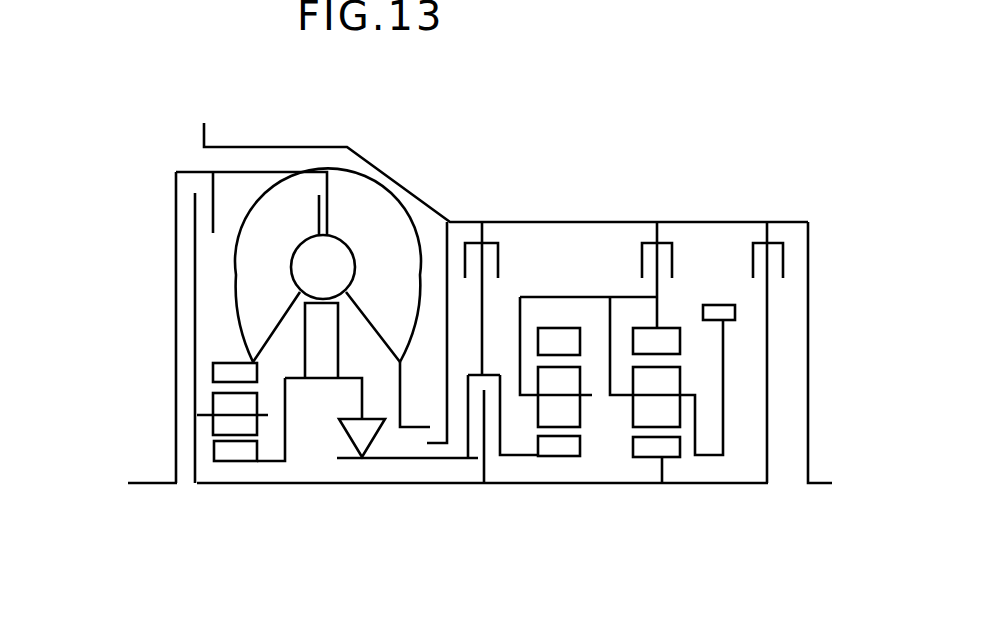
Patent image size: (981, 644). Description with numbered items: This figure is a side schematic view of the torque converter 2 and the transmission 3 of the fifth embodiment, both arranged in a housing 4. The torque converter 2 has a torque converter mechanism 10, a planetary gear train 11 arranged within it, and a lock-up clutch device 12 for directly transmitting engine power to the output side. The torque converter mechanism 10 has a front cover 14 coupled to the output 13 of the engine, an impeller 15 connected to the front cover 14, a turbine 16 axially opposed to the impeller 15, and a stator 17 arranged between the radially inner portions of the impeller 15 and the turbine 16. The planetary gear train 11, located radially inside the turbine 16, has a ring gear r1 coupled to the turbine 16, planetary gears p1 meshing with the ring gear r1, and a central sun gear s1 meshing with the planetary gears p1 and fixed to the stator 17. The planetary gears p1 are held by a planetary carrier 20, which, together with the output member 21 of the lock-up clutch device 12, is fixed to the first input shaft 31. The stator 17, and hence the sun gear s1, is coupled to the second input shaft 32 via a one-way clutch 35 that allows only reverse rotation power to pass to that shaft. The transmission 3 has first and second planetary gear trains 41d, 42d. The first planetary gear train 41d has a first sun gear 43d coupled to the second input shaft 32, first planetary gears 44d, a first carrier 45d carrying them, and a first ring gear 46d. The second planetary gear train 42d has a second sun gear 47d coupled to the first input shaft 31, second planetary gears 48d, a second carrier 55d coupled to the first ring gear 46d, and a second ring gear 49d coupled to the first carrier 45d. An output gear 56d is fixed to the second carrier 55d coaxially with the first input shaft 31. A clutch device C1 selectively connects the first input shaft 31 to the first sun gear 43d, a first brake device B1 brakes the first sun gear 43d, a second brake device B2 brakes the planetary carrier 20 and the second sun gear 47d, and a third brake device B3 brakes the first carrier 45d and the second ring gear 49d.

The torque converter 2 is at (408, 158).
The transmission 3 is at (650, 220).
The housing 4 is at (358, 150).
The torque converter mechanism 10 is at (398, 224).
The planetary gear train 11 is at (233, 466).
The lock-up clutch device 12 is at (184, 203).
The output of the engine 13 is at (150, 483).
The front cover 14 is at (174, 182).
The impeller 15 is at (398, 340).
The turbine 16 is at (264, 270).
The stator 17 is at (320, 322).
The planetary carrier 20 is at (197, 418).
The output member 21 is at (197, 366).
The first input shaft 31 is at (362, 485).
The second input shaft 32 is at (397, 460).
The one-way clutch 35 is at (360, 458).
The ring gear r1 is at (236, 370).
The planetary gears p1 is at (238, 423).
The sun gear s1 is at (222, 453).
The clutch device C1 is at (478, 445).
The first brake device B1 is at (490, 248).
The second brake device B2 is at (757, 243).
The third brake device B3 is at (673, 243).
The first planetary gear train 41d is at (549, 461).
The second planetary gear train 42d is at (651, 464).
The first sun gear 43d is at (562, 450).
The first planetary gears 44d is at (582, 372).
The first carrier 45d is at (528, 400).
The first ring gear 46d is at (557, 328).
The second sun gear 47d is at (668, 408).
The second planetary gears 48d is at (732, 484).
The second ring gear 49d is at (663, 338).
The second carrier 55d is at (625, 400).
The output gear 56d is at (725, 322).